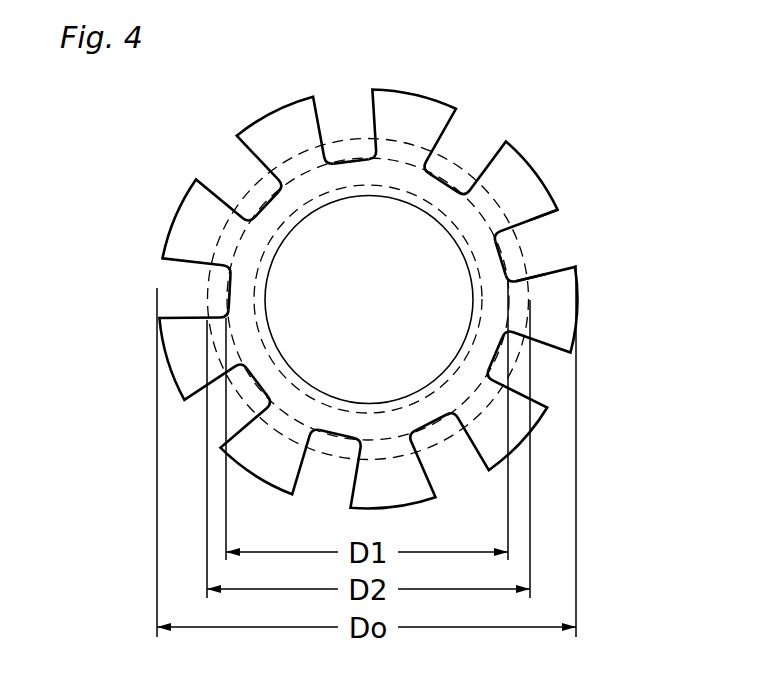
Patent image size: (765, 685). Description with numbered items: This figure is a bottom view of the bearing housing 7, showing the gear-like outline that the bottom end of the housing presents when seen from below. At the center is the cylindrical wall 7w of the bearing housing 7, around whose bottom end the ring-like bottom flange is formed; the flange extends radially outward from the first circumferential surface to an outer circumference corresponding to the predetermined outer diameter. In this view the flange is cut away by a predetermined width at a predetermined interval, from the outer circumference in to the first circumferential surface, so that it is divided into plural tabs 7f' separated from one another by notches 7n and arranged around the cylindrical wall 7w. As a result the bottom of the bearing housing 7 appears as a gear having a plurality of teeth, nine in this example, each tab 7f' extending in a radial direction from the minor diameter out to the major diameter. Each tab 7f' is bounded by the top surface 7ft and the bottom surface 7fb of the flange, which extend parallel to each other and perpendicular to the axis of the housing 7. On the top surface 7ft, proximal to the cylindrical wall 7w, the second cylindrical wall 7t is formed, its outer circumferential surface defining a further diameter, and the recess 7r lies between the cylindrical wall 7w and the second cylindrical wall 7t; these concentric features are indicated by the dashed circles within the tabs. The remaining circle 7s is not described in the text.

The bearing housing 7 is at (584, 101).
The notch 7n is at (312, 128).
The inner seat circle 7s is at (277, 233).
The cylindrical wall 7w is at (449, 177).
The recess 7r is at (472, 172).
The second cylindrical wall 7t is at (538, 170).
The top surface of bottom flange 7ft is at (536, 203).
The bottom surface of bottom flange 7fb is at (560, 280).
The tab 7f' is at (582, 310).